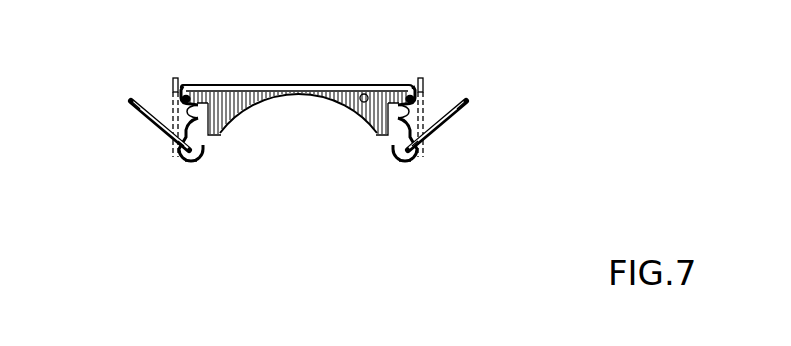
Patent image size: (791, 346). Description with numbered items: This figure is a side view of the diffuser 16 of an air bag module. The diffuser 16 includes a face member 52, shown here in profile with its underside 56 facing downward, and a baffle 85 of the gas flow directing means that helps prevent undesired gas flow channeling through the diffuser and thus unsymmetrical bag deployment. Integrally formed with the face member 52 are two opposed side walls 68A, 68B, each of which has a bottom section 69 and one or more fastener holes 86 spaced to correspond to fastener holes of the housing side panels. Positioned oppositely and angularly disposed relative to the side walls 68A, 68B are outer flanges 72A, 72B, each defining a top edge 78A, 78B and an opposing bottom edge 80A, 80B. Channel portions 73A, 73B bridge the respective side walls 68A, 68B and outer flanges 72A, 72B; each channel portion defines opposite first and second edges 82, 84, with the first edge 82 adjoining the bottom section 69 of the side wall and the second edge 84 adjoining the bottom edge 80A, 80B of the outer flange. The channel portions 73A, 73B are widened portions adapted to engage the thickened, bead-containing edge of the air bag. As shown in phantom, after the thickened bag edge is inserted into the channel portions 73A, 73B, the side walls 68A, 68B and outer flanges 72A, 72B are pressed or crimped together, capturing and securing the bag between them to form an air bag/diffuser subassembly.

The diffuser 16 is at (523, 70).
The face member 52 is at (318, 88).
The baffle 85 is at (243, 90).
The underside 56 is at (364, 95).
The bottom section 69 is at (221, 134).
The channel portion 73A is at (404, 160).
The channel portion 73B is at (200, 158).
The first edge 82 is at (199, 133).
The fastener hole 86 is at (181, 108).
The side wall 68A is at (421, 83).
The side wall 68B is at (177, 88).
The outer flange 72A is at (455, 122).
The outer flange 72B is at (148, 122).
The top edge 78A is at (464, 108).
The top edge 78B is at (131, 106).
The bottom edge 80A is at (424, 156).
The bottom edge 80B is at (172, 150).
The second edge 84 is at (186, 163).